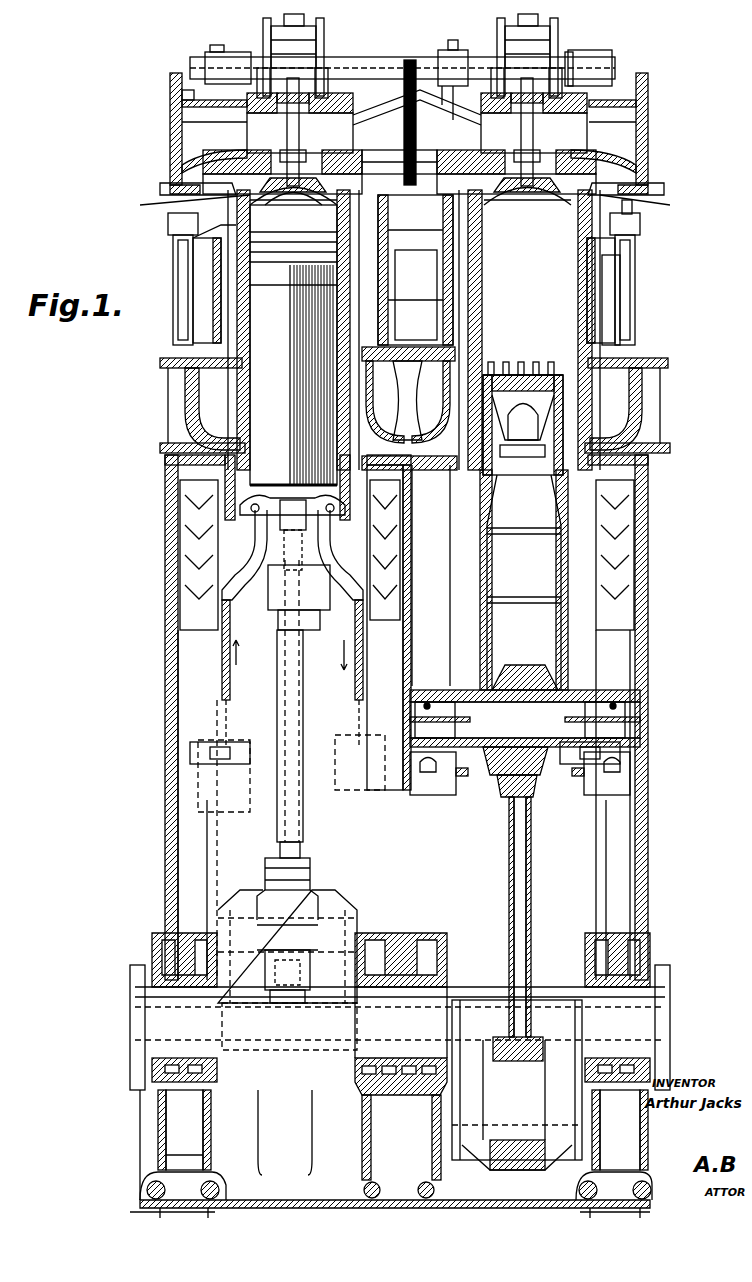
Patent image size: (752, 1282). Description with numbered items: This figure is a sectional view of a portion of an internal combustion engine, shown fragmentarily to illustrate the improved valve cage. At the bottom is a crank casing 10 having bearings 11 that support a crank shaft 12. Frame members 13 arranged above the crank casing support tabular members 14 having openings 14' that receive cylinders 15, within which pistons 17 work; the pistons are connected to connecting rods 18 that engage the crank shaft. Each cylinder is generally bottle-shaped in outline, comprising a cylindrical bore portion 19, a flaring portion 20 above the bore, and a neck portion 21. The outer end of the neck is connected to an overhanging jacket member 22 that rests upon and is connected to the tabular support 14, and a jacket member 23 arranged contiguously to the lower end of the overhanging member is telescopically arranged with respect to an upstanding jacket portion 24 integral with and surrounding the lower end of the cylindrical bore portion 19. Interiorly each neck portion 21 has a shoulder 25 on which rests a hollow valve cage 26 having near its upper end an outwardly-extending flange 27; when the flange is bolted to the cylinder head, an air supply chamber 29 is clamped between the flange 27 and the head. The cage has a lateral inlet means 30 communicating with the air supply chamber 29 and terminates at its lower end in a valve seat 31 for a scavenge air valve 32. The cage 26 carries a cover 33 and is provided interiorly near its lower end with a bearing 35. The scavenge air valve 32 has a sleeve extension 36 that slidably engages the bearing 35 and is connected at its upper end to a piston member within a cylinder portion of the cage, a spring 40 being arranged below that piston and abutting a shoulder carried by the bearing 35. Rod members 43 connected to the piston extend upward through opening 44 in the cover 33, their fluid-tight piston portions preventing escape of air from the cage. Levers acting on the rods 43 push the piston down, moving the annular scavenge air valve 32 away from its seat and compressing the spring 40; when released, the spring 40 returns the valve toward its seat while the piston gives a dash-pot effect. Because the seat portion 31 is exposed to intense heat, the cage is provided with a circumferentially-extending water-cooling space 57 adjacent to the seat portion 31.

The crank casing 10 is at (145, 1175).
The bearings 11 is at (215, 1075).
The crank shaft 12 is at (320, 1035).
The frame members 13 is at (172, 848).
The tabular members 14 is at (412, 279).
The openings 14' is at (657, 225).
The cylinders 15 is at (215, 318).
The pistons 17 is at (594, 558).
The connecting rods 18 is at (278, 708).
The cylindrical bore portion 19 is at (237, 286).
The flaring portion 20 is at (210, 195).
The neck portion 21 is at (397, 208).
The overhanging jacket member 22 is at (360, 205).
The jacket member 23 is at (662, 316).
The upstanding jacket portion 24 is at (290, 432).
The shoulder 25 is at (250, 190).
The valve cage 26 is at (185, 162).
The flange 27 is at (245, 75).
The air supply chamber 29 is at (180, 93).
The lateral inlet means 30 is at (200, 112).
The valve seat 31 is at (296, 250).
The scavenge air valve 32 is at (300, 295).
The cover 33 is at (235, 85).
The bearing 35 is at (285, 158).
The sleeve extension 36 is at (650, 130).
The spring 40 is at (400, 85).
The rod members 43 is at (300, 60).
The opening 44 is at (325, 80).
The water-cooling space 57 is at (200, 176).